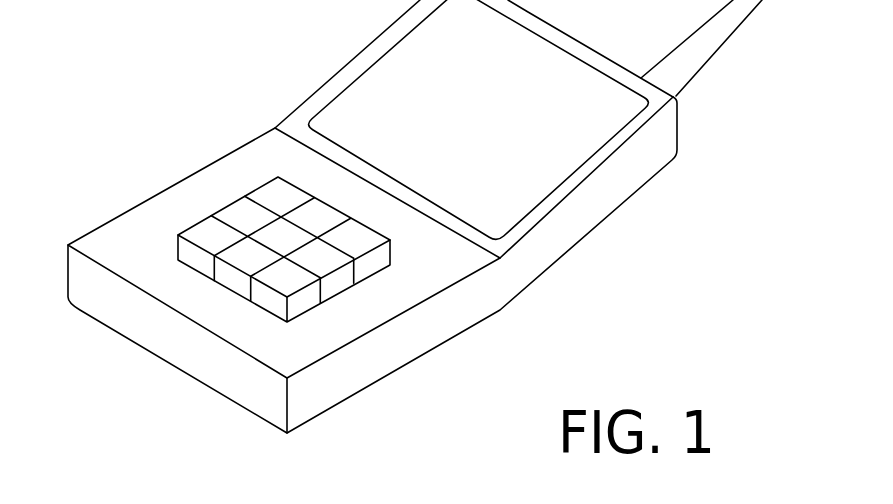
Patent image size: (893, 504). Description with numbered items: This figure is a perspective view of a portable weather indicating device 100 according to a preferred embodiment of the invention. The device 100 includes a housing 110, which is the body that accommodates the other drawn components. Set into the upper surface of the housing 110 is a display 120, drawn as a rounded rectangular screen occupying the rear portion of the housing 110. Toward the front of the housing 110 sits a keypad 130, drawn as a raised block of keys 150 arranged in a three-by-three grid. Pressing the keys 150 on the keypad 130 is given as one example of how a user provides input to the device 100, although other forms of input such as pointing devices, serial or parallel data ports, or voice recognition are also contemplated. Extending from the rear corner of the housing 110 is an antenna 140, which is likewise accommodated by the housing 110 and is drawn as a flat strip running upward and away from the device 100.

The portable weather indicating device 100 is at (158, 77).
The housing 110 is at (455, 331).
The display 120 is at (495, 122).
The keypad 130 is at (212, 315).
The antenna 140 is at (715, 52).
The keys 150 is at (253, 213).